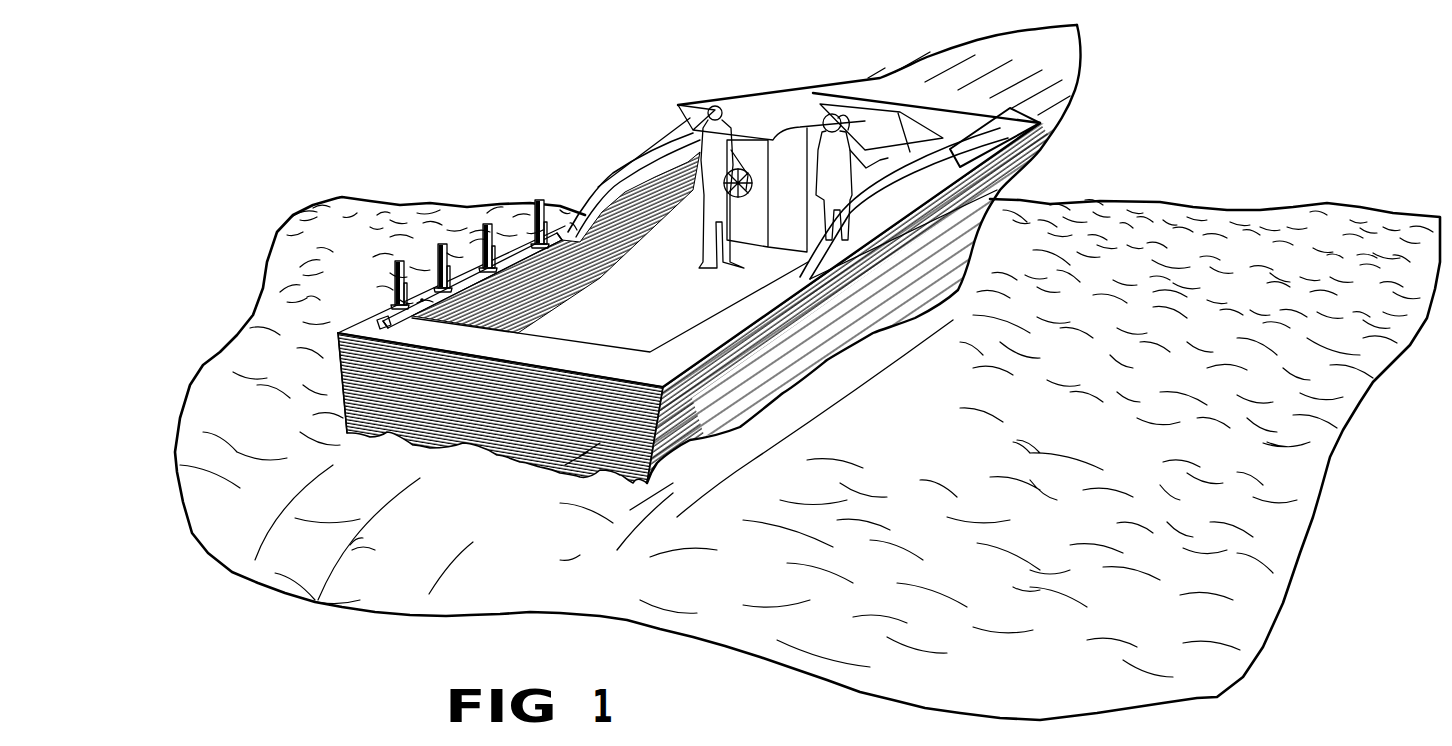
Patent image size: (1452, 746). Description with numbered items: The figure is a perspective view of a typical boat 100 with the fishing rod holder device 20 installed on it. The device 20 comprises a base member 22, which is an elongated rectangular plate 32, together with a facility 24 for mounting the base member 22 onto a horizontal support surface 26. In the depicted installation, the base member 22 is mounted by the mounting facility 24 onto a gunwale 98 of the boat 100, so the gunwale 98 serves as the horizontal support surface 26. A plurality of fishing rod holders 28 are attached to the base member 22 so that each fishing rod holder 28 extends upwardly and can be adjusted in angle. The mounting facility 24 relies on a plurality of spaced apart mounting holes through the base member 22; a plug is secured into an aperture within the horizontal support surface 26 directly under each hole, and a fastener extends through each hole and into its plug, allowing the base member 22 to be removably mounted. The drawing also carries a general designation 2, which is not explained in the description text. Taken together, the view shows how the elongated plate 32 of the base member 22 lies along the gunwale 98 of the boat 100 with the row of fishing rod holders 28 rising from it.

The mooring system 2 is at (415, 160).
The fishing rod holder device 20 is at (452, 209).
The base member 22 is at (370, 302).
The facility for mounting the base member 24 is at (513, 245).
The horizontal support surface 26 is at (567, 228).
The fishing rod holder 28 is at (382, 262).
The elongated rectangular plate 32 is at (388, 320).
The gunwale 98 is at (566, 256).
The boat 100 is at (1076, 128).